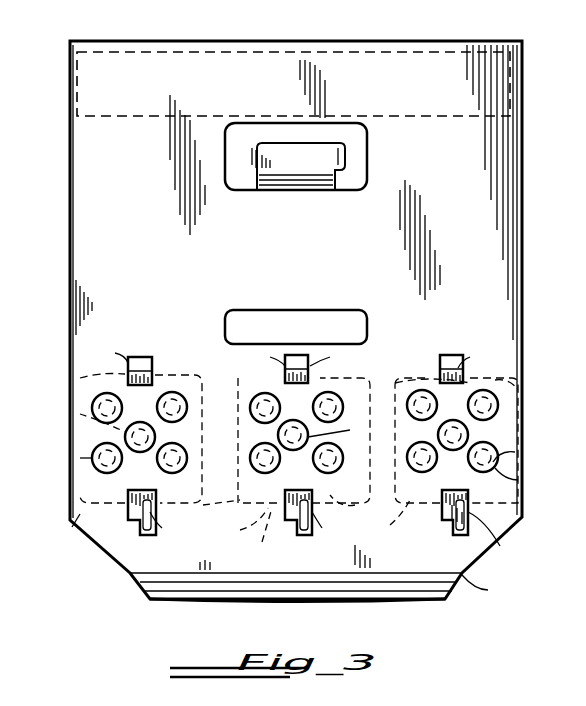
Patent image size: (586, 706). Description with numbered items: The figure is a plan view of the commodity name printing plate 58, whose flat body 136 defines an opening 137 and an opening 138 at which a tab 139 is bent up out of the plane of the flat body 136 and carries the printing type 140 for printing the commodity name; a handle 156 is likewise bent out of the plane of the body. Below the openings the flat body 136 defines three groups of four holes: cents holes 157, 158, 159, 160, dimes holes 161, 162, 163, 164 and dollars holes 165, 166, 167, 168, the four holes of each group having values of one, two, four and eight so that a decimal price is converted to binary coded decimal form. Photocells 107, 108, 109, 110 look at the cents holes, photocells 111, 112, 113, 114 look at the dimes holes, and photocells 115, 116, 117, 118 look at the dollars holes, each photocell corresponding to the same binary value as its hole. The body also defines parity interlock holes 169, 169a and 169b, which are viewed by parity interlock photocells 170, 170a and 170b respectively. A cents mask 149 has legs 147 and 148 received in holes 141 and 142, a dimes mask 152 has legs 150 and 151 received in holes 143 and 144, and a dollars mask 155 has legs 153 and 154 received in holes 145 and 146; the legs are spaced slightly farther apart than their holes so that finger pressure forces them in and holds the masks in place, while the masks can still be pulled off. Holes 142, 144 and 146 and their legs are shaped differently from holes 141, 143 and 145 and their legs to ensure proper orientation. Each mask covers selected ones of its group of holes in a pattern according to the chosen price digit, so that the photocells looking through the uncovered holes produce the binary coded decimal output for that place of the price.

The flat body 136 is at (236, 41).
The printing type 140 is at (377, 50).
The opening 138 is at (367, 160).
The tab 139 is at (303, 190).
The commodity name printing plate 58 is at (269, 264).
The opening 137 is at (333, 310).
The hole 143 is at (294, 355).
The leg 150 is at (261, 360).
The dimes hole 162 is at (338, 362).
The hole 141 is at (134, 357).
The leg 147 is at (104, 352).
The hole 145 is at (446, 357).
The leg 153 is at (481, 360).
The cents hole 157 is at (80, 376).
The cents hole 158 is at (165, 380).
The dimes hole 161 is at (256, 396).
The dollars hole 165 is at (425, 370).
The dollars hole 166 is at (518, 388).
The dollars mask 155 is at (518, 370).
The photocell 107 is at (95, 402).
The photocell 108 is at (187, 407).
The parity interlock photocell 170 is at (125, 437).
The parity interlock hole 169 is at (80, 414).
The photocell 109 is at (95, 466).
The cents hole 159 is at (80, 458).
The photocell 110 is at (187, 458).
The photocell 111 is at (278, 399).
The photocell 112 is at (343, 407).
The parity interlock hole 169a is at (278, 430).
The parity interlock photocell 170a is at (350, 432).
The photocell 113 is at (256, 470).
The photocell 114 is at (343, 458).
The photocell 115 is at (408, 398).
The photocell 116 is at (498, 408).
The parity interlock hole 169b is at (468, 432).
The parity interlock photocell 170b is at (515, 452).
The photocell 117 is at (410, 466).
The photocell 118 is at (492, 470).
The dollars hole 168 is at (518, 480).
The hole 142 is at (137, 535).
The leg 148 is at (172, 531).
The cents mask 149 is at (59, 528).
The hole 144 is at (290, 535).
The leg 151 is at (331, 531).
The dimes mask 152 is at (254, 537).
The dimes hole 163 is at (239, 525).
The cents hole 160 is at (221, 507).
The dimes hole 164 is at (360, 507).
The dollars hole 167 is at (385, 521).
The hole 146 is at (453, 528).
The leg 154 is at (504, 538).
The handle 156 is at (492, 589).